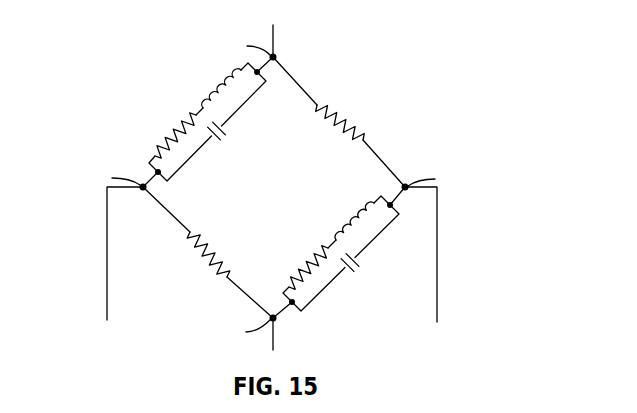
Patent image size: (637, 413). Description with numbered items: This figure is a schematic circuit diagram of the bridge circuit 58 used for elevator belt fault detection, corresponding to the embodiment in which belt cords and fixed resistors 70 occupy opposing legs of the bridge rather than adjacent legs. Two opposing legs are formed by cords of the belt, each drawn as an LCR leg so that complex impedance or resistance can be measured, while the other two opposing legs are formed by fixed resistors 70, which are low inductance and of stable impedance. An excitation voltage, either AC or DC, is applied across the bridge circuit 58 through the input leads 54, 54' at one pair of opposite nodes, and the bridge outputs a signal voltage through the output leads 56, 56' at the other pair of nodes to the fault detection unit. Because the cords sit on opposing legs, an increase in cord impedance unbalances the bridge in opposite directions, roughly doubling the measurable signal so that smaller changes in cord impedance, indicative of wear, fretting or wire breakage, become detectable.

The input lead 54 is at (451, 254).
The input lead 54' is at (93, 253).
The output lead 56 is at (303, 33).
The output lead 56' is at (305, 340).
The bridge circuit 58 is at (126, 125).
The fixed resistor 70 is at (352, 120).